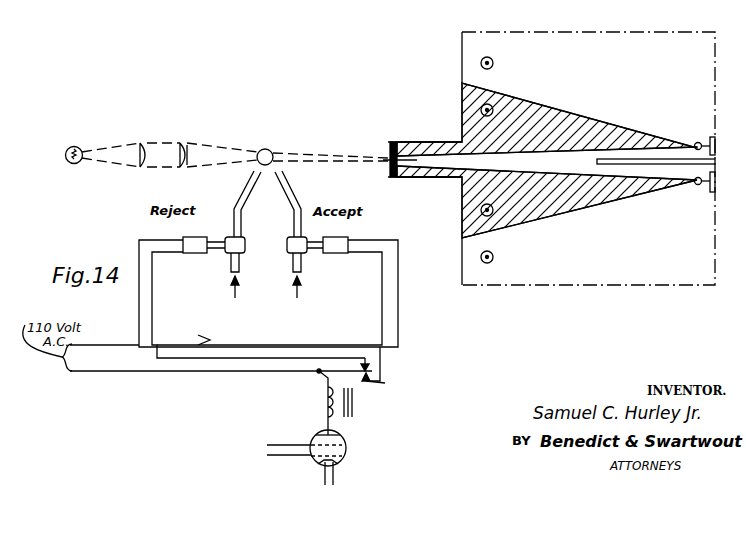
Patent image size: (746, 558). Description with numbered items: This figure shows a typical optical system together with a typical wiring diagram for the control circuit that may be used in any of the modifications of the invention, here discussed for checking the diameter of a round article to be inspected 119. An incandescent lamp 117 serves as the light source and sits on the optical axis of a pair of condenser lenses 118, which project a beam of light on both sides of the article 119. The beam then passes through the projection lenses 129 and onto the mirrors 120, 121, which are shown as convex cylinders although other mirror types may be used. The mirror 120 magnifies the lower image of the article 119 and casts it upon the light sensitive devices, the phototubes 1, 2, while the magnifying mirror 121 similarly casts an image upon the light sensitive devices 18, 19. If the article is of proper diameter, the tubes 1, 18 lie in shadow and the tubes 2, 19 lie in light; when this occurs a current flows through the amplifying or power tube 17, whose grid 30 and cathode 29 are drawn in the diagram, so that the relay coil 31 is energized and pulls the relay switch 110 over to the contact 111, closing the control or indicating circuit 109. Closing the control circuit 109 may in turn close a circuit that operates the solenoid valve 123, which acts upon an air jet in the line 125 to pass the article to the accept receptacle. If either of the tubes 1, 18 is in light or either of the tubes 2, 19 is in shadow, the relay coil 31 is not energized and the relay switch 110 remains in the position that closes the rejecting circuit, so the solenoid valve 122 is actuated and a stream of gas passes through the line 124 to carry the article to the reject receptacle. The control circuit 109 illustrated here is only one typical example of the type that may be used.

The incandescent lamp 117 is at (81, 147).
The condenser lenses 118 is at (172, 142).
The article to be inspected 119 is at (279, 134).
The projection lenses 129 is at (388, 142).
The phototube 1 is at (491, 101).
The phototube 2 is at (492, 60).
The light sensitive device 18 is at (493, 220).
The light sensitive device 19 is at (494, 259).
The mirror 120 is at (699, 142).
The mirror 121 is at (699, 185).
The line 124 is at (233, 226).
The line 125 is at (309, 226).
The solenoid valve 122 is at (208, 253).
The solenoid valve 123 is at (316, 253).
The control circuit 109 is at (267, 299).
The relay switch 110 is at (318, 371).
The contact 111 is at (385, 382).
The relay coil 31 is at (327, 403).
The grid 30 is at (311, 444).
The cathode 29 is at (310, 459).
The amplifying or power tube 17 is at (346, 448).